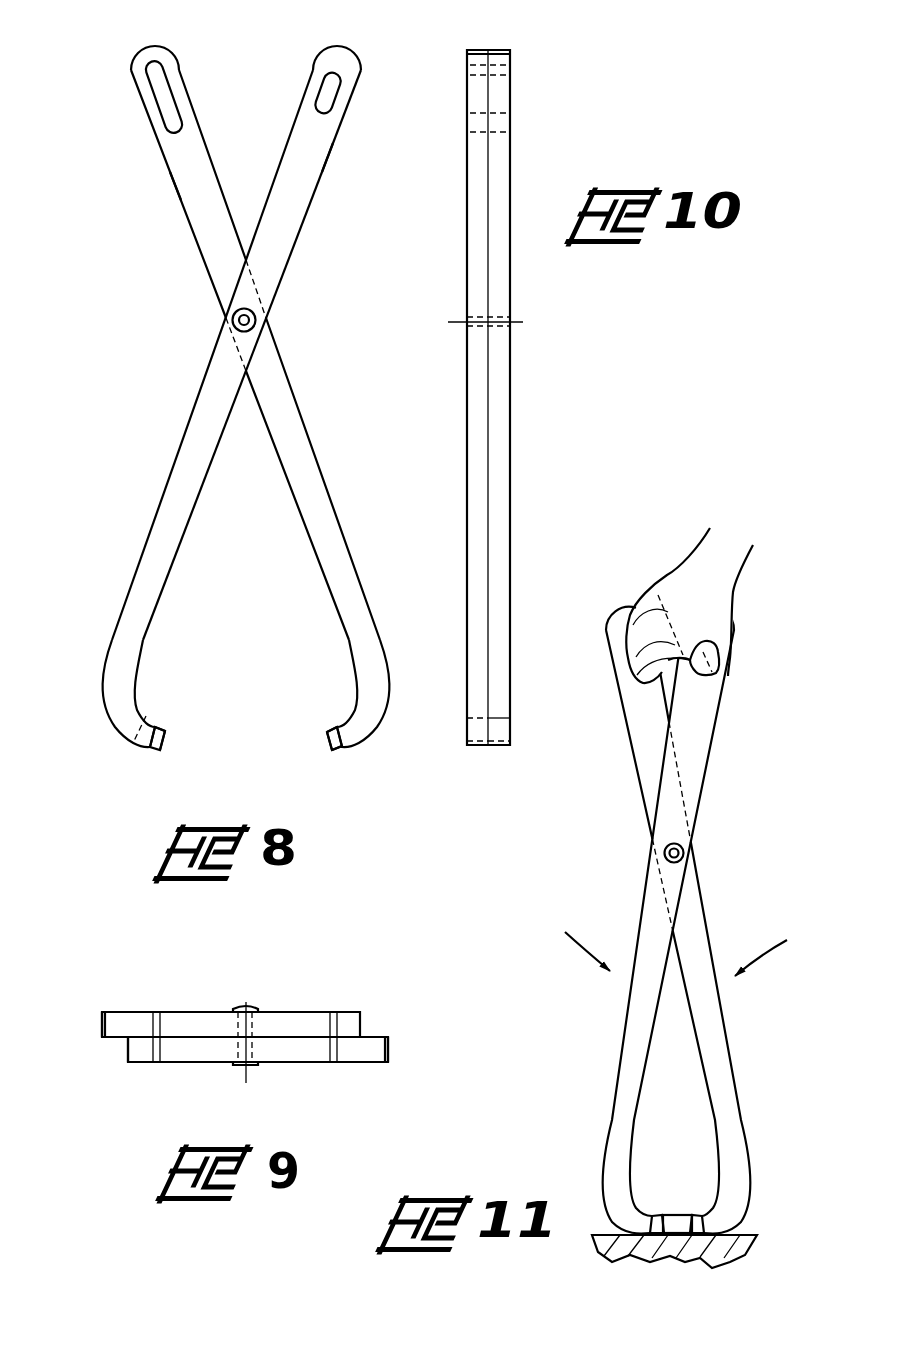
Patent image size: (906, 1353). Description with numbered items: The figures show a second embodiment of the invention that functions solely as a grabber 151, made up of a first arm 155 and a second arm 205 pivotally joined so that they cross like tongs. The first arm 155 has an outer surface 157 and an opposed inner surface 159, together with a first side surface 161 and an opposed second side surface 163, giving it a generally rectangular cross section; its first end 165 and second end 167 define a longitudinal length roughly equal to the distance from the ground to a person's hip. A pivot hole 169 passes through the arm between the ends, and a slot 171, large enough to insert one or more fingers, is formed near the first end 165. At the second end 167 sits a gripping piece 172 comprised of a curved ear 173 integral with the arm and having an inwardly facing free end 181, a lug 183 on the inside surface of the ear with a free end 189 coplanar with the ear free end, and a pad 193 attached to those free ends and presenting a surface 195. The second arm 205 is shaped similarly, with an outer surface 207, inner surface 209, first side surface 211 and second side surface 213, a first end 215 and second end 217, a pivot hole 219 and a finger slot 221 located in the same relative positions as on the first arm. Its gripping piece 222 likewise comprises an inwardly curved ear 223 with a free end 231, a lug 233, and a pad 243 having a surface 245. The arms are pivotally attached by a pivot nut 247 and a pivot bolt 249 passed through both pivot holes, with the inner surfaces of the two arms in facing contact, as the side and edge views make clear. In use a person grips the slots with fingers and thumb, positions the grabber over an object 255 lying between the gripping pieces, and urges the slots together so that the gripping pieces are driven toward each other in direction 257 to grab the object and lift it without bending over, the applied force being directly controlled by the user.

In FIG. 8, the grabber 151 is at (240, 403).
In FIG. 10, the grabber 151 is at (513, 412).
In FIG. 8, the first arm 155 is at (226, 394).
In FIG. 10, the first arm 155 is at (513, 428).
In FIG. 9, the first arm 155 is at (245, 984).
In FIG. 11, the first arm 155 is at (699, 918).
In FIG. 8, the outer surface 157 is at (317, 156).
In FIG. 9, the outer surface 157 is at (317, 1013).
In FIG. 9, the inner surface 159 is at (308, 1038).
In FIG. 8, the first side surface 161 is at (340, 127).
In FIG. 8, the second side surface 163 is at (300, 108).
In FIG. 8, the first end 165 is at (342, 46).
In FIG. 8, the second end 167 is at (112, 728).
In FIG. 10, the second end 167 is at (510, 51).
In FIG. 10, the pivot hole 169 is at (508, 311).
In FIG. 8, the slot 171 is at (327, 82).
In FIG. 10, the slot 171 is at (512, 113).
In FIG. 11, the slot 171 is at (722, 672).
In FIG. 8, the gripping piece 172 is at (149, 716).
In FIG. 10, the gripping piece 172 is at (512, 733).
In FIG. 11, the gripping piece 172 is at (641, 1193).
In FIG. 8, the ear 173 is at (145, 745).
In FIG. 9, the ear 173 is at (114, 1008).
In FIG. 9, the free end 181 is at (160, 1017).
In FIG. 9, the lug 183 is at (131, 1066).
In FIG. 9, the free end 189 is at (167, 1058).
In FIG. 8, the pad 193 is at (163, 729).
In FIG. 8, the surface 195 is at (165, 740).
In FIG. 8, the second arm 205 is at (251, 403).
In FIG. 10, the second arm 205 is at (464, 427).
In FIG. 9, the second arm 205 is at (251, 1061).
In FIG. 11, the second arm 205 is at (687, 932).
In FIG. 9, the outer surface 207 is at (190, 1062).
In FIG. 8, the inner surface 209 is at (174, 186).
In FIG. 9, the inner surface 209 is at (200, 1037).
In FIG. 8, the first side surface 211 is at (157, 152).
In FIG. 8, the second side surface 213 is at (213, 163).
In FIG. 8, the first end 215 is at (143, 47).
In FIG. 8, the second end 217 is at (373, 728).
In FIG. 10, the second end 217 is at (467, 51).
In FIG. 10, the pivot hole 219 is at (477, 317).
In FIG. 8, the slot 221 is at (165, 81).
In FIG. 10, the slot 221 is at (467, 112).
In FIG. 11, the slot 221 is at (620, 631).
In FIG. 8, the gripping piece 222 is at (336, 716).
In FIG. 10, the gripping piece 222 is at (465, 733).
In FIG. 11, the gripping piece 222 is at (741, 1220).
In FIG. 9, the ear 223 is at (383, 1065).
In FIG. 9, the free end 231 is at (327, 1053).
In FIG. 8, the lug 233 is at (349, 752).
In FIG. 9, the lug 233 is at (354, 1011).
In FIG. 8, the pad 243 is at (326, 728).
In FIG. 8, the surface 245 is at (328, 745).
In FIG. 8, the pivot nut 247 is at (256, 320).
In FIG. 9, the pivot nut 247 is at (237, 1008).
In FIG. 9, the pivot bolt 249 is at (233, 1067).
In FIG. 11, the object 255 is at (672, 1218).
In FIG. 11, the direction 257 is at (593, 948).